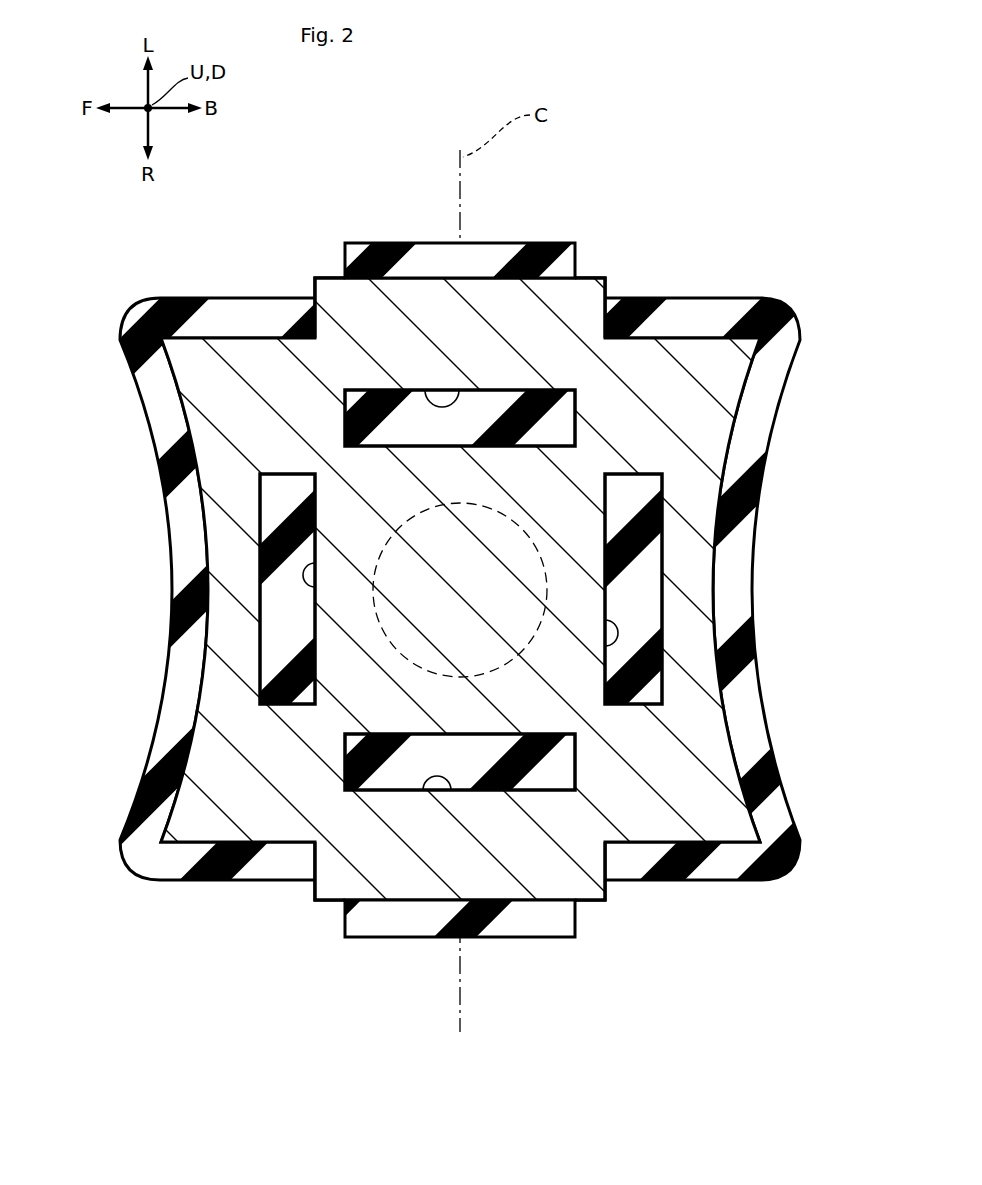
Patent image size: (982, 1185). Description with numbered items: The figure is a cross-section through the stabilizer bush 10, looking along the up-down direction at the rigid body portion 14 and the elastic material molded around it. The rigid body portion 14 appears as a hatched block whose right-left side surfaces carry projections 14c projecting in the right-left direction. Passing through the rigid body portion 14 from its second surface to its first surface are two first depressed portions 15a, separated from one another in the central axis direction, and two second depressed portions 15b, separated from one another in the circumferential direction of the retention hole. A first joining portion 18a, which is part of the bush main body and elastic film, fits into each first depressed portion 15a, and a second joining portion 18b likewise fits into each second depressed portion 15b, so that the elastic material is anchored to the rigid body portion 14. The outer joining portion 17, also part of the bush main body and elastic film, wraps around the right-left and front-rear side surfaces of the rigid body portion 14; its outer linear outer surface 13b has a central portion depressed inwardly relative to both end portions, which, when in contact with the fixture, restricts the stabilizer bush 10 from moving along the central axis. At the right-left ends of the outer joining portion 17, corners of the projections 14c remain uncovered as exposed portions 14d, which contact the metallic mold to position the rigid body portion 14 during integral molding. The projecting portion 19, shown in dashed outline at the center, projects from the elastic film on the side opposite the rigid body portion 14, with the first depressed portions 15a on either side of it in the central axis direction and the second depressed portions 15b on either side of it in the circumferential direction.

The stabilizer bush 10 is at (714, 210).
The linear outer surface 13b is at (167, 553).
The rigid body portion 14 is at (692, 350).
The projections 14c is at (478, 295).
The exposed portions 14d is at (337, 290).
The first depressed portions 15a is at (491, 592).
The second depressed portions 15b is at (491, 592).
The outer joining portion 17 is at (491, 592).
The first joining portion 18a is at (428, 432).
The second joining portion 18b is at (267, 653).
The projecting portion 19 is at (513, 680).